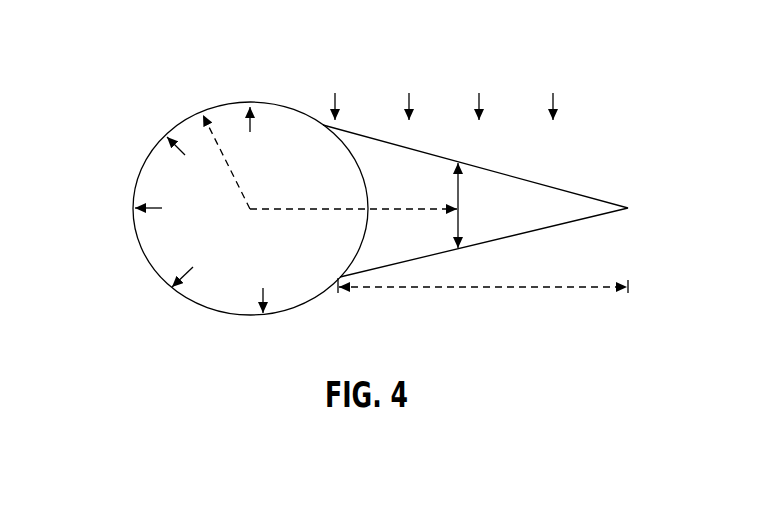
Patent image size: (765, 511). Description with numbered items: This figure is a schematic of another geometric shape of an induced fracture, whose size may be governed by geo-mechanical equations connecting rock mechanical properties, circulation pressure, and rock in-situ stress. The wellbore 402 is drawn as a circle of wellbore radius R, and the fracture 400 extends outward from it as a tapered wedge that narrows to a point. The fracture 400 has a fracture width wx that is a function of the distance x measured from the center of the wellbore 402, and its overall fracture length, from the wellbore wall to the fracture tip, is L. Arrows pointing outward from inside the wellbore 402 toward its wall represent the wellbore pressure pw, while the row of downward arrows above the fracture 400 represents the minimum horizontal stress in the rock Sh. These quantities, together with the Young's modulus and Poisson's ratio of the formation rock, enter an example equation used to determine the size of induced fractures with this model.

The fracture 400 is at (593, 188).
The wellbore 402 is at (142, 93).
The wellbore pressure pw is at (199, 210).
The radius of the wellbore R is at (226, 162).
The distance from the center of the wellbore x is at (353, 196).
The width of the fracture wx is at (489, 205).
The length of the fracture L is at (483, 273).
The minimum horizontal stress in rock Sh is at (444, 105).